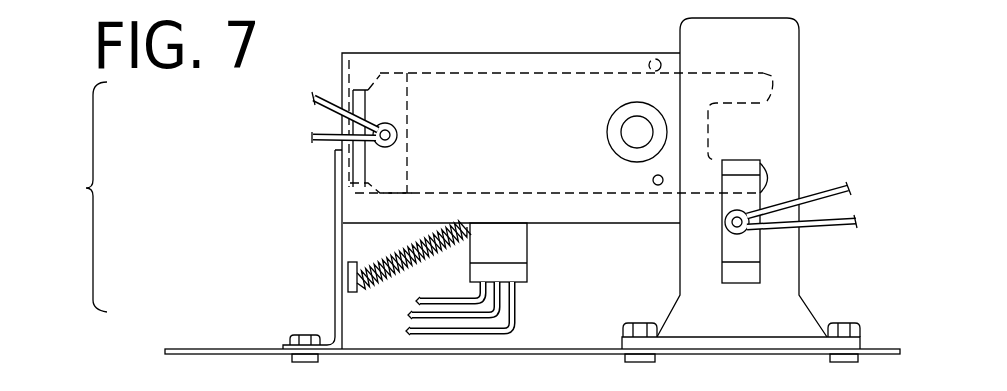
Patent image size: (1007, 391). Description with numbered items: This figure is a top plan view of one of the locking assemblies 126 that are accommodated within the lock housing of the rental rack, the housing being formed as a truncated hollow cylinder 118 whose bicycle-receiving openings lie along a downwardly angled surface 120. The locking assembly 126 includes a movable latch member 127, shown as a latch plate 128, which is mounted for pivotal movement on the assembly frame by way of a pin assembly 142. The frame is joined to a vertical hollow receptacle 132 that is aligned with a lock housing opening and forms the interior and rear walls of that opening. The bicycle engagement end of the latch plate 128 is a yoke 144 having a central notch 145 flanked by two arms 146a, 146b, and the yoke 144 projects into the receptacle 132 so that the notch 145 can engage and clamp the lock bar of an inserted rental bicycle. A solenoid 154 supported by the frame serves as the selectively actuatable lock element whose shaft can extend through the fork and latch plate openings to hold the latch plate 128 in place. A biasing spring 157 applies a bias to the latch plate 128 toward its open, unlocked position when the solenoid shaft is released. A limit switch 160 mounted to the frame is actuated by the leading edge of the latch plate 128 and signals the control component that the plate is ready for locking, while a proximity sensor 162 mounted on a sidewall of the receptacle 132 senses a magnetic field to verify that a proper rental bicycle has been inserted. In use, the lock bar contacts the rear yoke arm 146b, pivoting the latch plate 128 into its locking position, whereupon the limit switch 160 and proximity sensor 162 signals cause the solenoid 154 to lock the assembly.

The truncated hollow cylinder 118 is at (268, 356).
The downwardly angled surface 120 is at (578, 355).
The locking assembly 126 is at (76, 197).
The movable latch member 127 is at (462, 108).
The latch plate 128 is at (547, 97).
The hollow receptacle 132 is at (784, 332).
The pin assembly 142 is at (638, 130).
The yoke 144 is at (775, 107).
The central notch 145 is at (737, 138).
The yoke arm 146a is at (775, 170).
The yoke arm 146b is at (772, 73).
The solenoid 154 is at (383, 130).
The biasing spring 157 is at (378, 249).
The limit switch 160 is at (528, 252).
The proximity sensor 162 is at (750, 187).